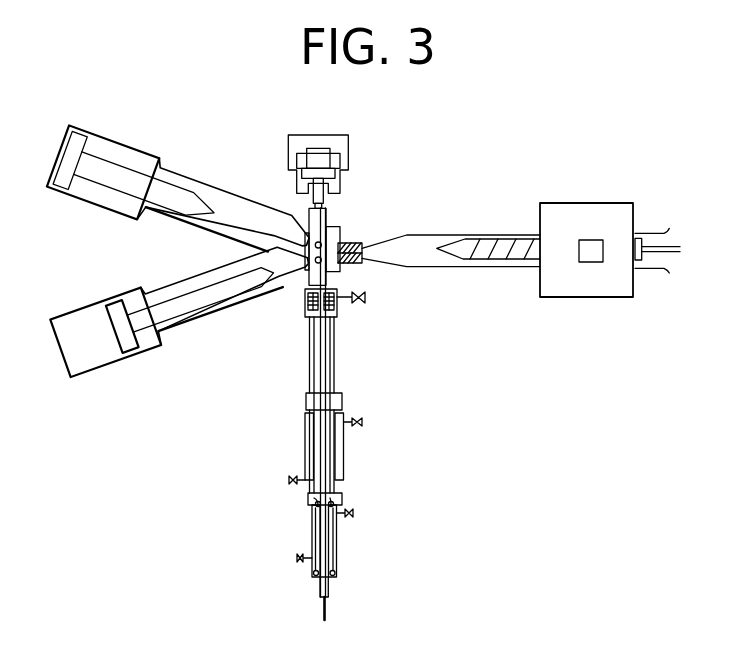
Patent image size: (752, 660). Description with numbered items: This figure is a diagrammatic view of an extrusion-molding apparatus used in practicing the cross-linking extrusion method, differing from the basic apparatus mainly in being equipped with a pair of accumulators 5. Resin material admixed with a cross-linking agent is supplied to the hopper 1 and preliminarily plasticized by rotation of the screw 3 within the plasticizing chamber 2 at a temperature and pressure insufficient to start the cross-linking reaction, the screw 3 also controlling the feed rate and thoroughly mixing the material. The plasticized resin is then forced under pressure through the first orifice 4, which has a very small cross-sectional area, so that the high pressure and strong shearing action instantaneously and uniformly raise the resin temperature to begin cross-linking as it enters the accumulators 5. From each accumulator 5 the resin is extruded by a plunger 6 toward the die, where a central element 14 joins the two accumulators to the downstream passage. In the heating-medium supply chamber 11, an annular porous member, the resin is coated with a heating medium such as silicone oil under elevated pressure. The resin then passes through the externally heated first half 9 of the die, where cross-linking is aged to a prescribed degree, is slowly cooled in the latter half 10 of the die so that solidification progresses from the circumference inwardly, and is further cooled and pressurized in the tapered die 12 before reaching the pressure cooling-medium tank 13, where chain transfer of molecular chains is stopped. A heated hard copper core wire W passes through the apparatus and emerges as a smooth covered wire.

The hopper 1 is at (603, 210).
The plasticizing chamber 2 is at (415, 234).
The screw 3 is at (475, 237).
The first orifice 4 is at (347, 243).
The accumulator 5 is at (245, 197).
The plunger 6 is at (188, 192).
The first half of the die 9 is at (332, 345).
The latter half of the die 10 is at (315, 428).
The heating-medium supply member 11 is at (307, 301).
The tapered die 12 is at (331, 502).
The pressure cooling-medium tank 13 is at (337, 540).
The valve body 14 is at (324, 216).
The core wire W is at (327, 612).